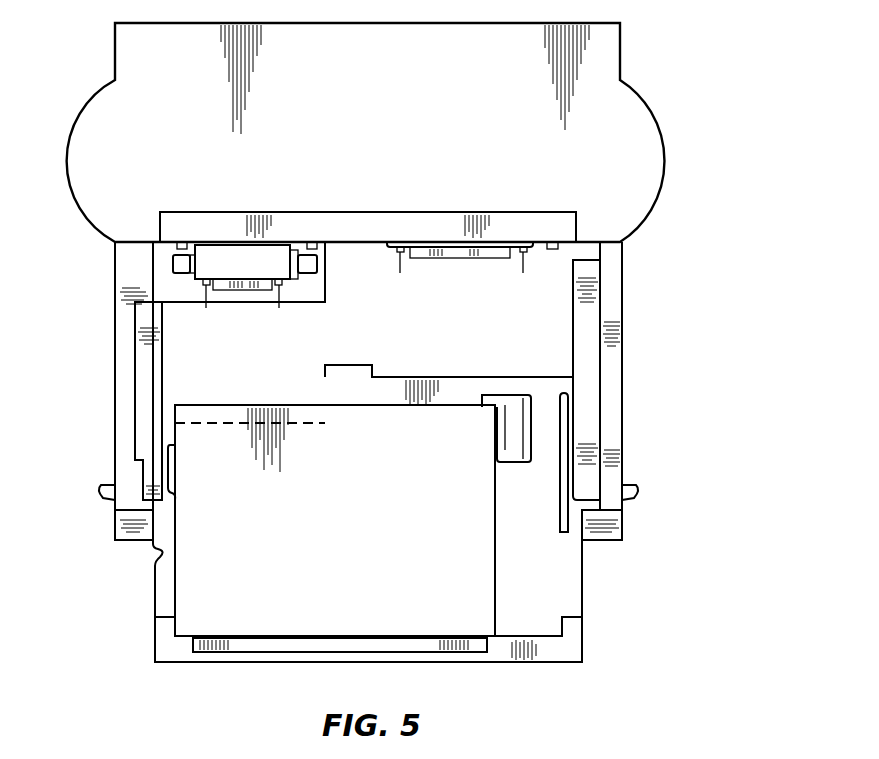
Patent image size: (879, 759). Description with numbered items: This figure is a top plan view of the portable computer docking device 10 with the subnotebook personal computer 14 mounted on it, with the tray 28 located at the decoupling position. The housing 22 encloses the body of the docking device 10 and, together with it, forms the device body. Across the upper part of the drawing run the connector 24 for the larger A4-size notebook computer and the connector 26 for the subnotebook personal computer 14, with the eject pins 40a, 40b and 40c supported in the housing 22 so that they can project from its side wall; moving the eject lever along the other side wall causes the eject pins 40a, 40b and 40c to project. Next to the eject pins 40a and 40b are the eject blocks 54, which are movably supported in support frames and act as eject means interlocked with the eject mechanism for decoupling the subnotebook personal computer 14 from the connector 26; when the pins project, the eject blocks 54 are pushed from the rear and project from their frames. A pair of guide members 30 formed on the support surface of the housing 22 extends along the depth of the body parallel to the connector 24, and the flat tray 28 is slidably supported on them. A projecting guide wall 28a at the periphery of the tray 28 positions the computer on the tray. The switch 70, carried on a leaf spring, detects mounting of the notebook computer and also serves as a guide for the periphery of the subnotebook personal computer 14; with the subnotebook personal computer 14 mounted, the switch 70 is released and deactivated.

The portable computer docking device 10 is at (684, 76).
The subnotebook personal computer 14 is at (497, 552).
The housing 22 is at (642, 327).
The connector 24 is at (460, 244).
The connector 26 is at (236, 258).
The tray 28 is at (206, 671).
The guide wall 28a is at (357, 366).
The guide members 30 is at (149, 397).
The eject pin 40a is at (182, 242).
The eject pin 40b is at (312, 242).
The eject pin 40c is at (553, 242).
The eject blocks 54 is at (172, 265).
The switch 70 is at (514, 424).